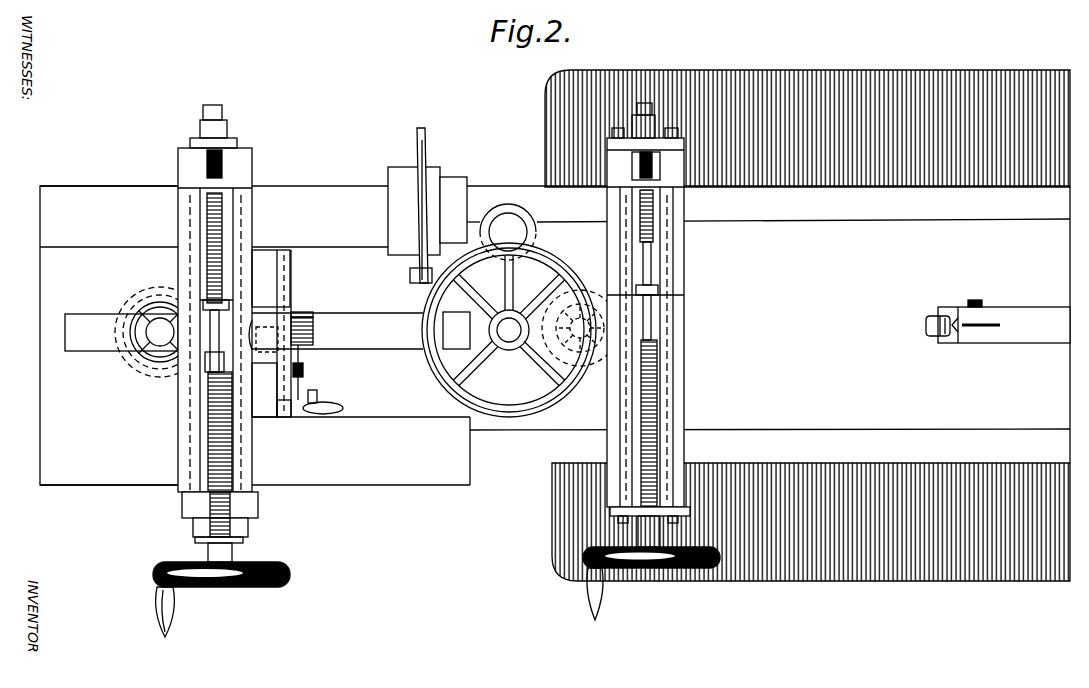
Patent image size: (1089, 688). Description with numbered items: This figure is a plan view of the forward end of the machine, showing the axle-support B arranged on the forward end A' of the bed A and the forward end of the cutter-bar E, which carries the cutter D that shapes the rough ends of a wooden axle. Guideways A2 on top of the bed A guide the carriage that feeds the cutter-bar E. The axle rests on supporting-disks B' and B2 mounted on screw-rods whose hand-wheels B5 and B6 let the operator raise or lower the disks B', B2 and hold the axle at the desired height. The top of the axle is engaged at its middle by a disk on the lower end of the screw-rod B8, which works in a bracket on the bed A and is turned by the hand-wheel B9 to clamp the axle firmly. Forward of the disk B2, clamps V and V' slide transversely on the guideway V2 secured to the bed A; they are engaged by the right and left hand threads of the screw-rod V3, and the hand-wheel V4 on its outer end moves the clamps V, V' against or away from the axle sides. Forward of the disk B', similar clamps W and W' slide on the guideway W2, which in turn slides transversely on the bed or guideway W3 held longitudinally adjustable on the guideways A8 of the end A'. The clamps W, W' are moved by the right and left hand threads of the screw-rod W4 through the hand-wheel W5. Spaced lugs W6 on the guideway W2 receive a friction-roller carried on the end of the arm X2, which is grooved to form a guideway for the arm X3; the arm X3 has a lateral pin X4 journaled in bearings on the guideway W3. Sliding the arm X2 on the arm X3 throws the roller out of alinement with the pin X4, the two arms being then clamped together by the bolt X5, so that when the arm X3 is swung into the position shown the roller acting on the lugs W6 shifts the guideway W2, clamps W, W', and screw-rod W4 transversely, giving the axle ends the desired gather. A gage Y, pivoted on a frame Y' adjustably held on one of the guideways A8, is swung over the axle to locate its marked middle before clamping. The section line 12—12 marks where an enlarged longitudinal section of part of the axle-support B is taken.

The bed A is at (807, 324).
The forward end of bed A' is at (90, 335).
The guideways A2 is at (887, 205).
The guideways A8 is at (143, 173).
The axle-support B is at (555, 198).
The supporting-disk B' is at (160, 320).
The supporting-disk B2 is at (600, 316).
The hand-wheel B5 is at (126, 341).
The hand-wheel B6 is at (594, 372).
The screw-rod B8 is at (511, 345).
The hand-wheel B9 is at (447, 388).
The cutter D is at (927, 323).
The cutter-bar E is at (1012, 343).
The clamp V is at (660, 305).
The clamp V' is at (657, 284).
The guideway V2 is at (685, 482).
The screw-rod V3 is at (660, 343).
The hand-wheel V4 is at (646, 577).
The clamp W is at (199, 298).
The clamp W' is at (239, 288).
The guideway W2 is at (246, 500).
The bed or guideway W3 is at (262, 258).
The screw-rod W4 is at (212, 356).
The hand-wheel W5 is at (222, 587).
The spaced lugs W6 is at (262, 328).
The arm X2 is at (277, 386).
The arm X3 is at (304, 371).
The lateral pin X4 is at (313, 318).
The bolt X5 is at (313, 390).
The gage Y is at (427, 205).
The frame Y' is at (409, 211).
The section line 12 is at (113, 331).